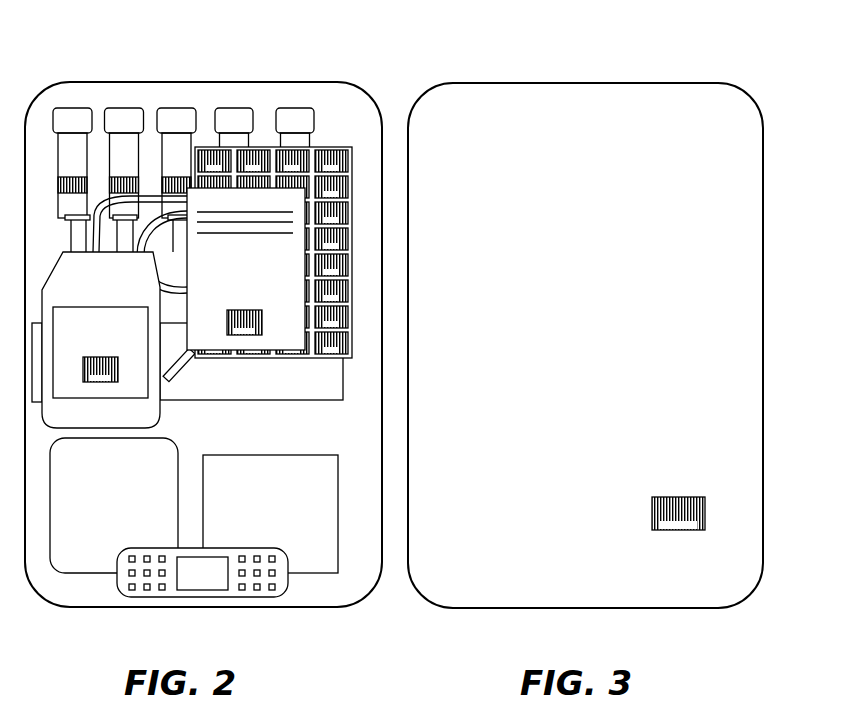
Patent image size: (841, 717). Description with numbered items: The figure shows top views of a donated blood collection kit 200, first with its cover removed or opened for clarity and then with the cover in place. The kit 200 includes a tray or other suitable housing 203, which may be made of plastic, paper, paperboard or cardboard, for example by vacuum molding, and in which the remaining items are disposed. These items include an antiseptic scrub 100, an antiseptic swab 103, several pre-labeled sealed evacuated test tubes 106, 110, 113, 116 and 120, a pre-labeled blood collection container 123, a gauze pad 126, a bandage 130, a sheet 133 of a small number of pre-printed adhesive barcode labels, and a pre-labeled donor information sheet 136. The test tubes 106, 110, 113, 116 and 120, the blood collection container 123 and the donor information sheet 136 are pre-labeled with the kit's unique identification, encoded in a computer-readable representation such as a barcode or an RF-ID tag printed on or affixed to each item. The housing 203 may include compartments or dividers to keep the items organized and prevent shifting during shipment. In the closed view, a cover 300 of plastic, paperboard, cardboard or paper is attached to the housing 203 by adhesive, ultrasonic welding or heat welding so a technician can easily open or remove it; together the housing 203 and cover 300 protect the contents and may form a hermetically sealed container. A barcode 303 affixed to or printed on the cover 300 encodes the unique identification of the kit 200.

In FIG. 2, the antiseptic scrub 100 is at (99, 540).
In FIG. 2, the antiseptic swab 103 is at (239, 396).
In FIG. 2, the pre-labeled sealed evacuated test tube 106 is at (74, 108).
In FIG. 2, the pre-labeled sealed evacuated test tube 110 is at (124, 108).
In FIG. 2, the pre-labeled sealed evacuated test tube 113 is at (175, 108).
In FIG. 2, the pre-labeled sealed evacuated test tube 116 is at (232, 108).
In FIG. 2, the pre-labeled sealed evacuated test tube 120 is at (293, 108).
In FIG. 2, the pre-labeled blood collection container 123 is at (88, 286).
In FIG. 2, the gauze pad 126 is at (256, 538).
In FIG. 2, the bandage 130 is at (188, 583).
In FIG. 2, the sheet of pre-printed adhesive barcode labels 133 is at (330, 147).
In FIG. 2, the pre-labeled donor information sheet 136 is at (231, 286).
In FIG. 2, the kit 200 is at (290, 624).
In FIG. 3, the kit 200 is at (652, 625).
In FIG. 2, the housing 203 is at (127, 608).
In FIG. 3, the cover 300 is at (658, 118).
In FIG. 3, the barcode 303 is at (650, 513).